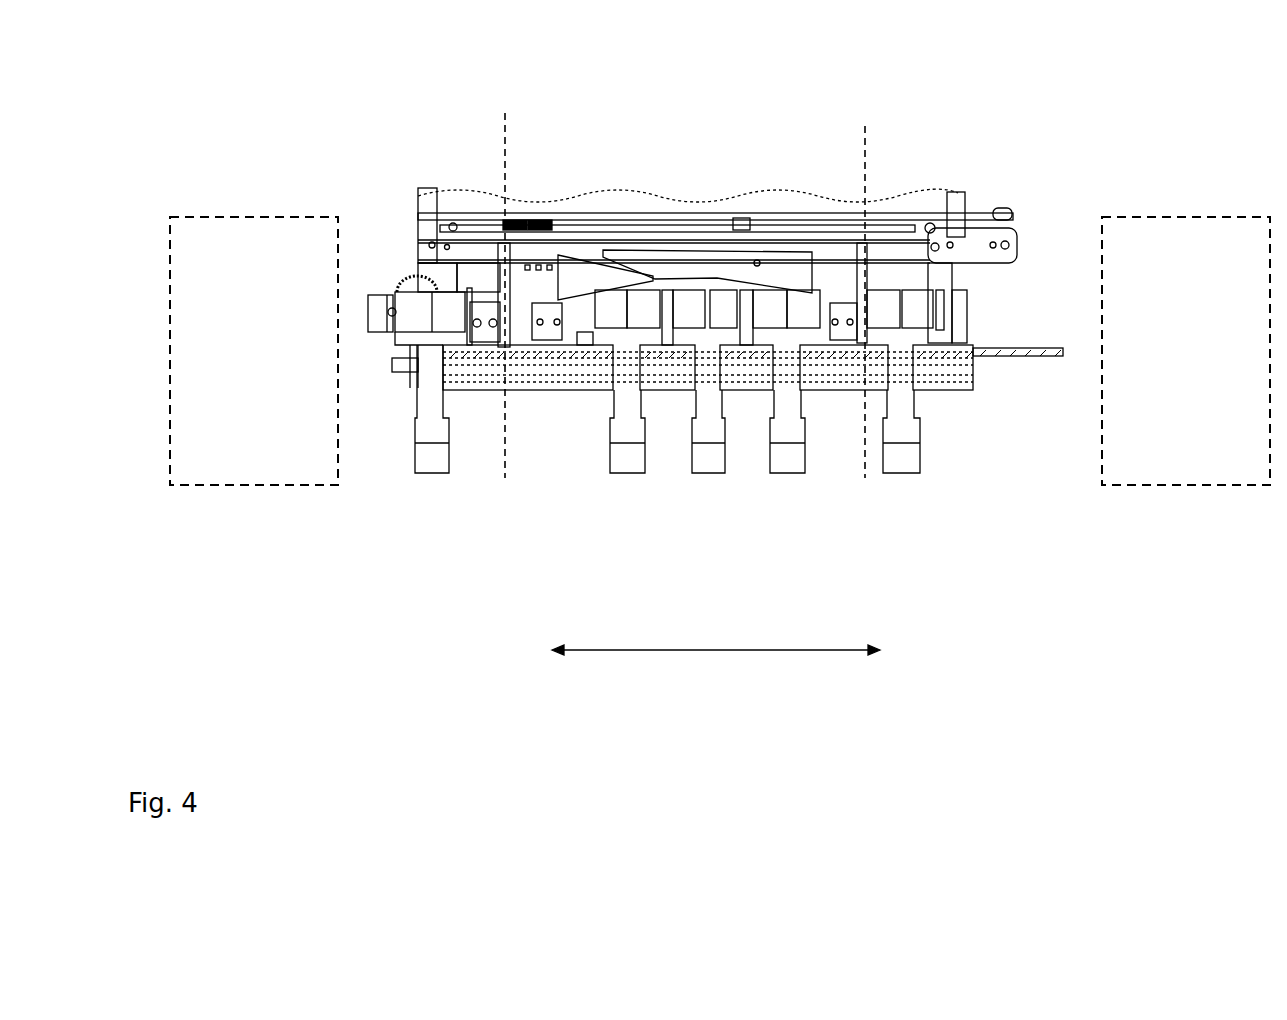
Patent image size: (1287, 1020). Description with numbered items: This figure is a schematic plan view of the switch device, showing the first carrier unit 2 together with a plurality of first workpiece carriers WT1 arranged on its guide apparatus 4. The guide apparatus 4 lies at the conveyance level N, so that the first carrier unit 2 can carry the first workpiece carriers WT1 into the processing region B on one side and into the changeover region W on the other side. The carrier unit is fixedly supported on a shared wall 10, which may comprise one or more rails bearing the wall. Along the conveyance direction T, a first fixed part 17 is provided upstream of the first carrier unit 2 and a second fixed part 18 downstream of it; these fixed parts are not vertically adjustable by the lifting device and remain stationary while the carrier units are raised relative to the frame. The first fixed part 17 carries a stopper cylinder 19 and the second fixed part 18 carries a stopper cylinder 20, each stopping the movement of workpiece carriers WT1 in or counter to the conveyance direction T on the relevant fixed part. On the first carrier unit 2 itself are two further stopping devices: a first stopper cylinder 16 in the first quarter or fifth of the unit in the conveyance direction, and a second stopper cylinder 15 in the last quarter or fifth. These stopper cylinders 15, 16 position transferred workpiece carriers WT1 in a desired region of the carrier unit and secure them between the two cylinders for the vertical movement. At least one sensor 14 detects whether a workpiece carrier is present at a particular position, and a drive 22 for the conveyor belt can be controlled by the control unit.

The first carrier unit 2 is at (658, 265).
The guide apparatus 4 is at (828, 350).
The shared wall 10 is at (595, 190).
The sensor 14 is at (587, 345).
The second stopper cylinder 15 is at (843, 307).
The first stopper cylinder 16 is at (552, 312).
The first fixed part 17 is at (904, 192).
The second fixed part 18 is at (467, 196).
The stopper cylinder 19 is at (938, 288).
The stopper cylinder 20 is at (483, 333).
The drive 22 is at (400, 287).
The first workpiece carrier WT1 is at (428, 474).
The processing region B is at (254, 351).
The changeover region W is at (1186, 351).
The conveyance level N is at (1124, 614).
The conveyance direction T is at (695, 652).